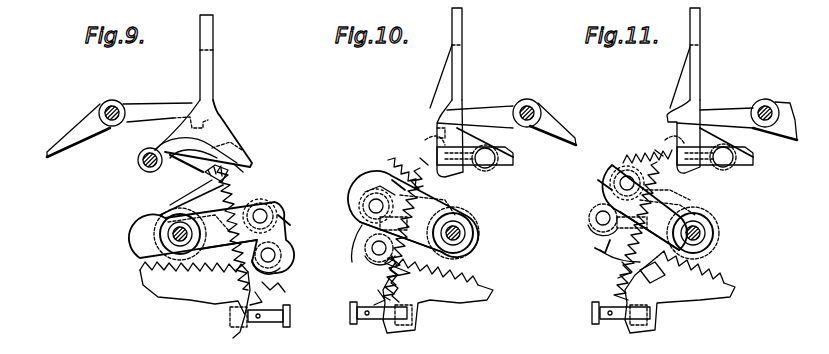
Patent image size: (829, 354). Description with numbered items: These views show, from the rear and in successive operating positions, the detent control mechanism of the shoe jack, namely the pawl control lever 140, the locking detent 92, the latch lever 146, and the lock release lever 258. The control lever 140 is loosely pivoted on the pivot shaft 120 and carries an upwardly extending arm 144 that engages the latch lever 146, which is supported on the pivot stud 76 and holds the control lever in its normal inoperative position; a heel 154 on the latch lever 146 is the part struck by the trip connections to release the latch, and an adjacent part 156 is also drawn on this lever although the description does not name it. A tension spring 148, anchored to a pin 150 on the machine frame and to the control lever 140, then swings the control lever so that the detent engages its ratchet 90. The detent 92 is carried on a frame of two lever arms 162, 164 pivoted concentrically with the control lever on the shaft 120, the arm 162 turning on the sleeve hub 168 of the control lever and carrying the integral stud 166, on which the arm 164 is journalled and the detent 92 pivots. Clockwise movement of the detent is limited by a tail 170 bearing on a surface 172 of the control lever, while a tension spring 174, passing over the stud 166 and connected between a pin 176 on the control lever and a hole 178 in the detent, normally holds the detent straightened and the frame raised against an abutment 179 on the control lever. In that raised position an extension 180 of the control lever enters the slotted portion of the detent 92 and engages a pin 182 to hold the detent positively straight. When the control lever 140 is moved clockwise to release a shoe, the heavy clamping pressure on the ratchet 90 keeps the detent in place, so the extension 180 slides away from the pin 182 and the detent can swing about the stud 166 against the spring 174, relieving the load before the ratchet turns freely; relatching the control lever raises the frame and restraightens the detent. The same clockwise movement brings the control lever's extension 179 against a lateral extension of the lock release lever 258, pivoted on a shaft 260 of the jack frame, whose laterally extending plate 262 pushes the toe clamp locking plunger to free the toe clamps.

In FIG. 9, the pivot stud 76 is at (118, 103).
In FIG. 10, the pivot stud 76 is at (527, 99).
In FIG. 11, the pivot stud 76 is at (762, 99).
In FIG. 9, the ratchet 90 is at (147, 268).
In FIG. 10, the ratchet 90 is at (462, 282).
In FIG. 11, the ratchet 90 is at (715, 285).
In FIG. 9, the locking detent 92 is at (279, 288).
In FIG. 10, the locking detent 92 is at (422, 272).
In FIG. 11, the locking detent 92 is at (605, 243).
In FIG. 9, the pivot shaft 120 is at (160, 237).
In FIG. 10, the pivot shaft 120 is at (474, 231).
In FIG. 11, the pivot shaft 120 is at (714, 233).
In FIG. 9, the pawl control lever 140 is at (166, 212).
In FIG. 10, the pawl control lever 140 is at (470, 212).
In FIG. 11, the pawl control lever 140 is at (705, 212).
In FIG. 9, the upwardly extending arm 144 is at (235, 148).
In FIG. 10, the upwardly extending arm 144 is at (440, 135).
In FIG. 11, the upwardly extending arm 144 is at (683, 112).
In FIG. 9, the latch lever 146 is at (150, 108).
In FIG. 10, the latch lever 146 is at (480, 110).
In FIG. 11, the latch lever 146 is at (740, 93).
In FIG. 9, the tension spring 148 is at (265, 300).
In FIG. 10, the tension spring 148 is at (378, 292).
In FIG. 11, the tension spring 148 is at (625, 265).
In FIG. 9, the pin 150 is at (273, 321).
In FIG. 10, the pin 150 is at (357, 313).
In FIG. 11, the pin 150 is at (592, 315).
In FIG. 9, the heel 154 is at (68, 130).
In FIG. 10, the heel 154 is at (563, 125).
In FIG. 11, the heel 154 is at (793, 110).
In FIG. 9, the connecting arm 156 is at (172, 174).
In FIG. 10, the connecting arm 156 is at (505, 153).
In FIG. 11, the connecting arm 156 is at (745, 153).
In FIG. 10, the lever arm 162 is at (368, 203).
In FIG. 11, the lever arm 162 is at (650, 280).
In FIG. 9, the lever arm 164 is at (160, 223).
In FIG. 9, the stud 166 is at (262, 206).
In FIG. 10, the stud 166 is at (372, 199).
In FIG. 11, the stud 166 is at (612, 182).
In FIG. 9, the sleeve hub 168 is at (154, 249).
In FIG. 10, the sleeve hub 168 is at (480, 243).
In FIG. 11, the sleeve hub 168 is at (718, 246).
In FIG. 9, the tail 170 is at (212, 181).
In FIG. 10, the tail 170 is at (412, 170).
In FIG. 11, the tail 170 is at (690, 190).
In FIG. 9, the surface 172 is at (165, 222).
In FIG. 10, the surface 172 is at (455, 196).
In FIG. 11, the surface 172 is at (695, 205).
In FIG. 9, the tension spring 174 is at (283, 222).
In FIG. 10, the tension spring 174 is at (398, 185).
In FIG. 11, the tension spring 174 is at (605, 195).
In FIG. 9, the pin 176 is at (243, 158).
In FIG. 10, the pin 176 is at (425, 137).
In FIG. 11, the pin 176 is at (663, 150).
In FIG. 9, the hole 178 is at (281, 254).
In FIG. 10, the hole 178 is at (378, 256).
In FIG. 11, the hole 178 is at (595, 214).
In FIG. 9, the abutment 179 is at (246, 172).
In FIG. 10, the abutment 179 is at (420, 160).
In FIG. 11, the abutment 179 is at (655, 150).
In FIG. 9, the extension 180 is at (165, 256).
In FIG. 10, the extension 180 is at (360, 216).
In FIG. 11, the extension 180 is at (600, 234).
In FIG. 9, the pin 182 is at (284, 263).
In FIG. 10, the pin 182 is at (385, 266).
In FIG. 11, the pin 182 is at (590, 222).
In FIG. 9, the lock release lever 258 is at (213, 88).
In FIG. 10, the lock release lever 258 is at (452, 95).
In FIG. 11, the lock release lever 258 is at (683, 92).
In FIG. 9, the shaft 260 is at (138, 161).
In FIG. 10, the shaft 260 is at (497, 165).
In FIG. 11, the shaft 260 is at (735, 165).
In FIG. 9, the laterally extending plate 262 is at (212, 45).
In FIG. 10, the laterally extending plate 262 is at (452, 33).
In FIG. 11, the laterally extending plate 262 is at (702, 42).